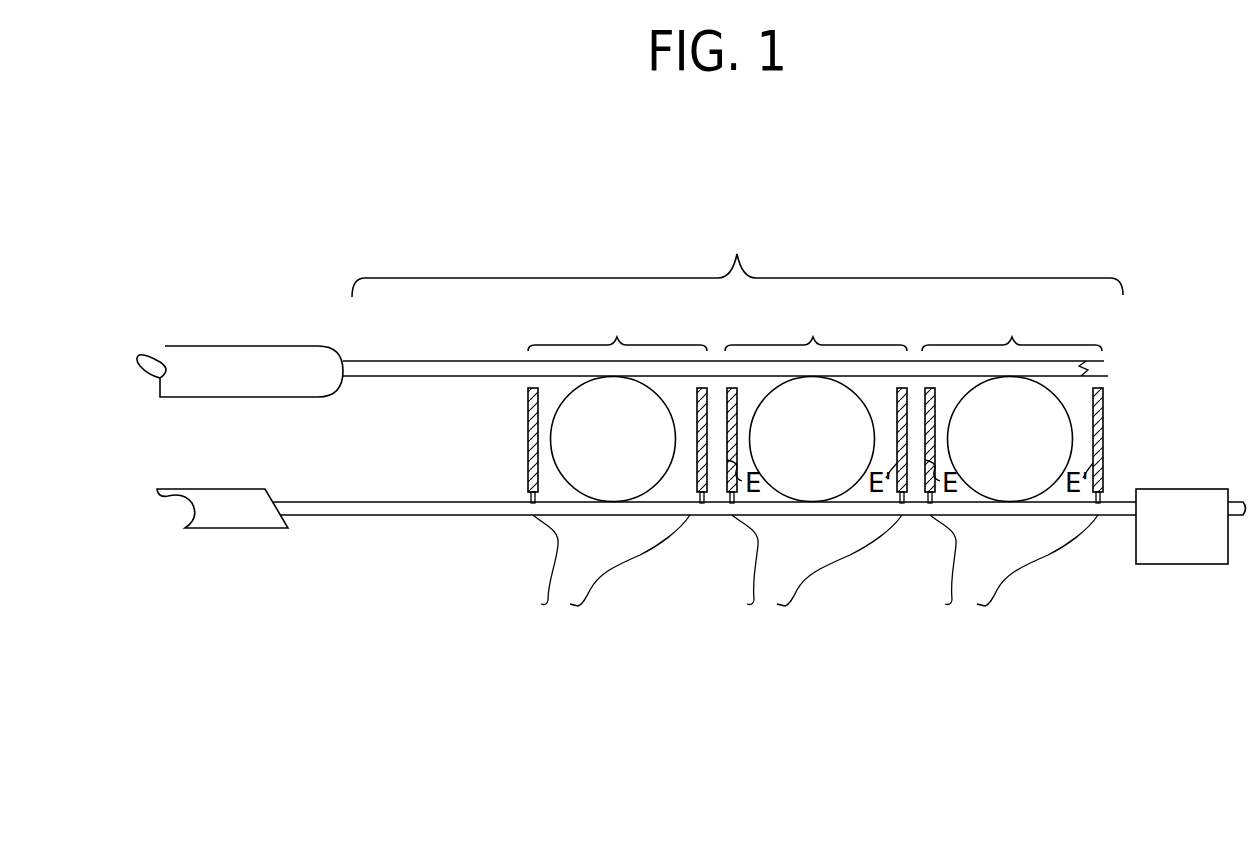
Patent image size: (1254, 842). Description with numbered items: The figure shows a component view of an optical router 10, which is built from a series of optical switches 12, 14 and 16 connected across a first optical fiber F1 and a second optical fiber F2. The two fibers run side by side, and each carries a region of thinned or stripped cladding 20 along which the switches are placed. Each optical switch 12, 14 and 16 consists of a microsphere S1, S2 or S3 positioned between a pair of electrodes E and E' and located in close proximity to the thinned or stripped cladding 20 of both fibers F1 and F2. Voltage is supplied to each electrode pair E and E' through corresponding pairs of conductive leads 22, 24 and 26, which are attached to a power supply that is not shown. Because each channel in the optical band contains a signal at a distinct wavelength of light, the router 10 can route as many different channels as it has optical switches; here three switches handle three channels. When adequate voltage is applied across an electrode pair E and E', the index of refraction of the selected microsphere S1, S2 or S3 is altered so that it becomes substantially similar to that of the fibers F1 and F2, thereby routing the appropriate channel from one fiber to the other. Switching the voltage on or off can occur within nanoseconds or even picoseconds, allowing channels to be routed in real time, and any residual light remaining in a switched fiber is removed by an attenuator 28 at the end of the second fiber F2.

The optical router 10 is at (318, 312).
The optical switch 12 is at (617, 330).
The optical switch 14 is at (816, 330).
The optical switch 16 is at (1012, 329).
The region of thinned or stripped cladding 20 is at (737, 255).
The pair of conductive leads 22 is at (565, 606).
The pair of conductive leads 24 is at (772, 606).
The pair of conductive leads 26 is at (970, 606).
The attenuator 28 is at (1194, 537).
The first optical fiber F1 is at (296, 387).
The second optical fiber F2 is at (254, 522).
The microsphere S1 is at (634, 484).
The microsphere S2 is at (831, 484).
The microsphere S3 is at (1030, 484).
The electrode E is at (513, 445).
The electrode E' is at (687, 445).